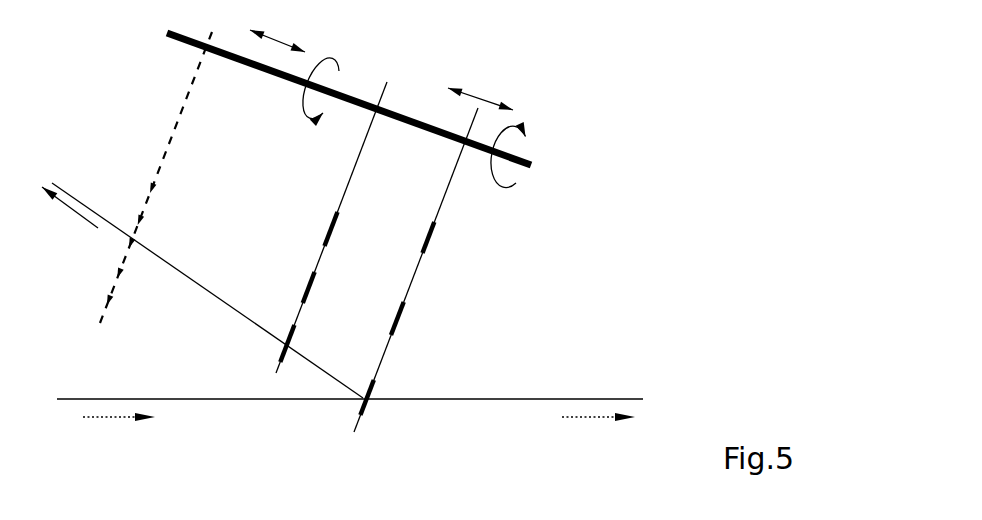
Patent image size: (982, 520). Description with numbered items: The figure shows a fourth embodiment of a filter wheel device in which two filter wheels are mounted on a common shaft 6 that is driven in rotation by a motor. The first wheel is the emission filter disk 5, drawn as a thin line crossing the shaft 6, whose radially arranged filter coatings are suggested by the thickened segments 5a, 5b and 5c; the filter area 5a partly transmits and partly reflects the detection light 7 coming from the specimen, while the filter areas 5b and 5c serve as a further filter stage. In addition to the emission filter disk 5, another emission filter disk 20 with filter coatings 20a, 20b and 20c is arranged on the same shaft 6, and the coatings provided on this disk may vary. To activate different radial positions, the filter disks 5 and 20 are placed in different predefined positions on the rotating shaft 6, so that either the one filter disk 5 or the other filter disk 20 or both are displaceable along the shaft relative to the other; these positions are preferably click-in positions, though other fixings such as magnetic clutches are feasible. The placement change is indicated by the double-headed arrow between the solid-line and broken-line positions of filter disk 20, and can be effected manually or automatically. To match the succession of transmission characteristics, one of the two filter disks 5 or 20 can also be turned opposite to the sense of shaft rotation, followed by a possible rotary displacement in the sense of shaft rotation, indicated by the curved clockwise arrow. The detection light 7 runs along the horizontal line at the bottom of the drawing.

The shaft 6 is at (168, 34).
The emission filter disk 20 is at (383, 95).
The filter coating 20a is at (287, 347).
The filter coating 20b is at (305, 289).
The filter coating 20c is at (329, 234).
The emission filter disk 5 is at (445, 202).
The filter area 5a is at (363, 412).
The filter area 5b is at (394, 334).
The filter area 5c is at (425, 250).
The detection light 7 is at (213, 400).